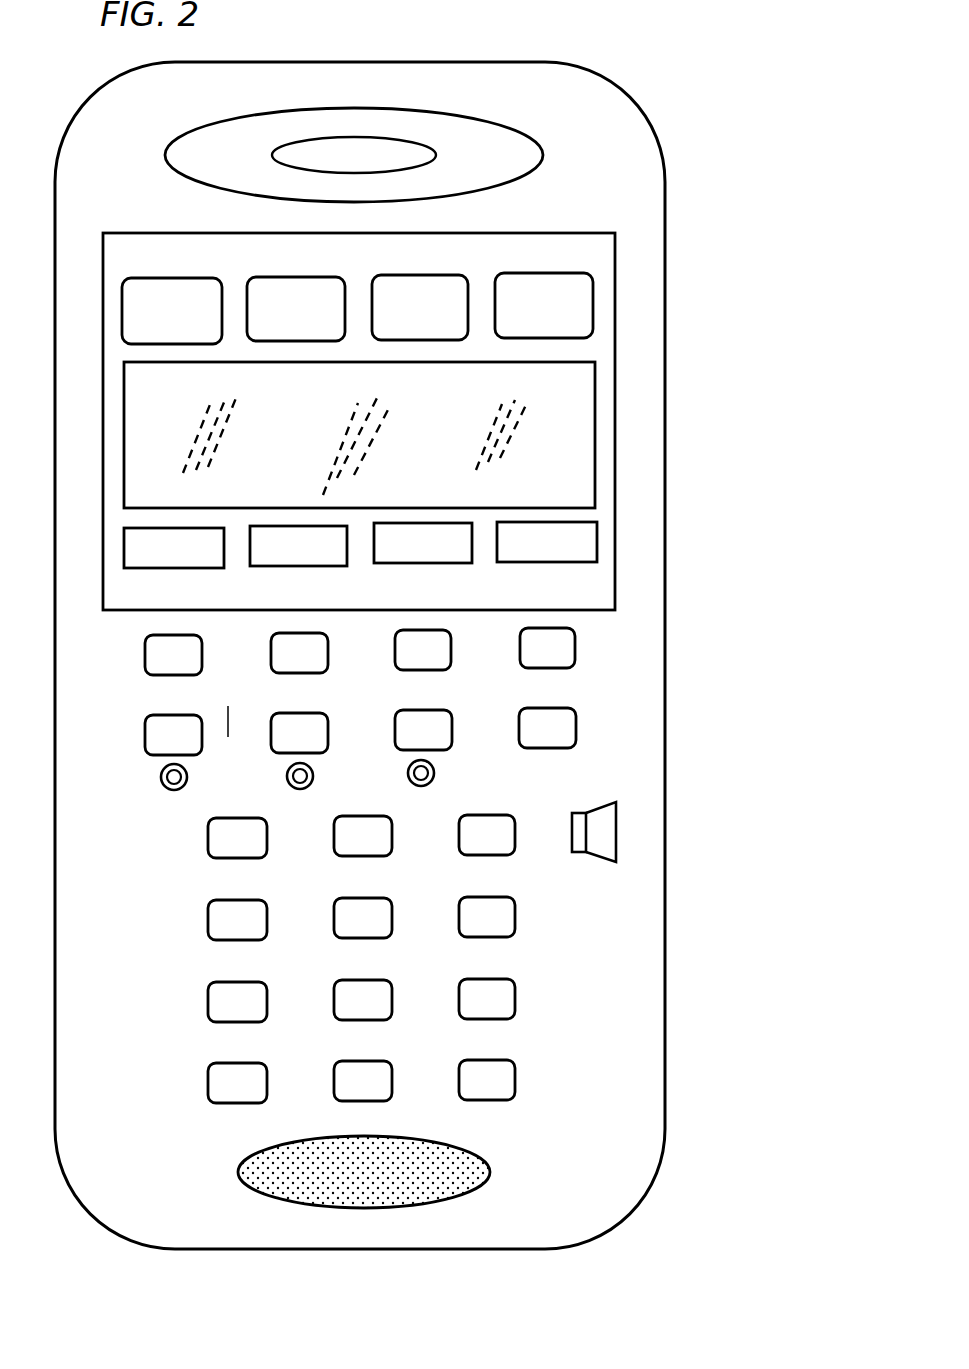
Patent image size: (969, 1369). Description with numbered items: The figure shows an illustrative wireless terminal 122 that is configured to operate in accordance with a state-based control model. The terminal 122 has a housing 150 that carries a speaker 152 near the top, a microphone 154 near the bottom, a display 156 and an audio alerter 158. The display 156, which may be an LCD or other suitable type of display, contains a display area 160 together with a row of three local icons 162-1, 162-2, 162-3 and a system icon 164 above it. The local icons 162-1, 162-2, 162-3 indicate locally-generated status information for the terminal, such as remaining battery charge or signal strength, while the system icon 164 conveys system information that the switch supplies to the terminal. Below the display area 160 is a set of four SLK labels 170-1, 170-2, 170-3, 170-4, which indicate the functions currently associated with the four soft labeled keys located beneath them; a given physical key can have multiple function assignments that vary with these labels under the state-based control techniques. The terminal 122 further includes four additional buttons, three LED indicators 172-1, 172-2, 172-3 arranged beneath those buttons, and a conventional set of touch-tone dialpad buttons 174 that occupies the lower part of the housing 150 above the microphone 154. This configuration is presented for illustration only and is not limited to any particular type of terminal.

The wireless terminal 122 is at (622, 48).
The housing 150 is at (97, 110).
The speaker 152 is at (543, 155).
The microphone 154 is at (238, 1172).
The display 156 is at (122, 233).
The audio alerter 158 is at (580, 812).
The display area 160 is at (582, 368).
The local icon 162-1 is at (170, 276).
The local icon 162-2 is at (294, 276).
The local icon 162-3 is at (418, 274).
The system icon 164 is at (542, 274).
The SLK label 170-1 is at (170, 569).
The SLK label 170-2 is at (296, 567).
The SLK label 170-3 is at (420, 564).
The SLK label 170-4 is at (545, 563).
The LED indicator 172-1 is at (161, 777).
The LED indicator 172-2 is at (287, 776).
The LED indicator 172-3 is at (434, 773).
The touch-tone dialpad buttons 174 is at (194, 820).